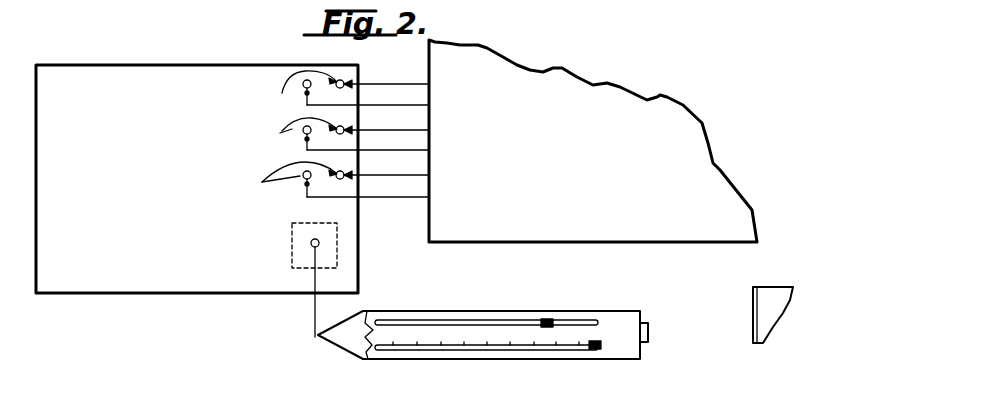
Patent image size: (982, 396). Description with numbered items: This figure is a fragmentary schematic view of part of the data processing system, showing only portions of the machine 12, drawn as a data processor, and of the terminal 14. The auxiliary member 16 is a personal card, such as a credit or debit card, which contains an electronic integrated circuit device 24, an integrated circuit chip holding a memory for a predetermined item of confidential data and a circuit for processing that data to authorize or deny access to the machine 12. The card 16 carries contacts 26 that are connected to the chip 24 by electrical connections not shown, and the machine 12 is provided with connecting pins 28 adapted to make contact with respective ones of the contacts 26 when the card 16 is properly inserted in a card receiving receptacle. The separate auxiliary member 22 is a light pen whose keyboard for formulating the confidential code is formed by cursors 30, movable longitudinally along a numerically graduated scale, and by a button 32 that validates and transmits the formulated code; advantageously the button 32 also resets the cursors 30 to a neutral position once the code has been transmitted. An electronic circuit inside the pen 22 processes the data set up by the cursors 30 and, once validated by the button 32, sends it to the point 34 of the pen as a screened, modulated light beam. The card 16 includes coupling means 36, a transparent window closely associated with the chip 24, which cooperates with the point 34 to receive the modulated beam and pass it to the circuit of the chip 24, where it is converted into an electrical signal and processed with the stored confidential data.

The machine 12 is at (710, 244).
The terminal 14 is at (748, 322).
The auxiliary member 16 is at (163, 302).
The separate auxiliary member 22 is at (496, 364).
The electronic integrated circuit device 24 is at (288, 262).
The contacts 26 is at (299, 139).
The connecting pins 28 is at (422, 128).
The cursors 30 is at (547, 319).
The button 32 is at (648, 330).
The point 34 is at (317, 336).
The coupling means 36 is at (311, 243).